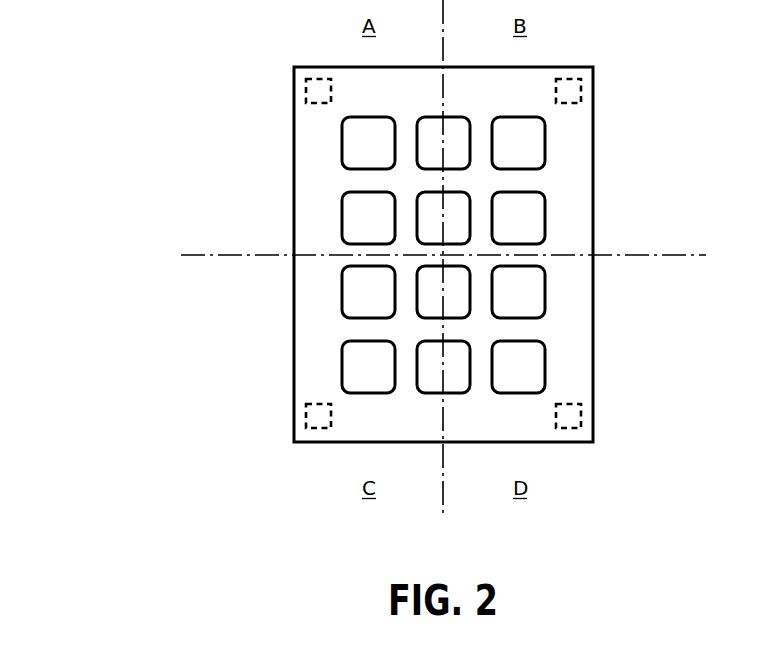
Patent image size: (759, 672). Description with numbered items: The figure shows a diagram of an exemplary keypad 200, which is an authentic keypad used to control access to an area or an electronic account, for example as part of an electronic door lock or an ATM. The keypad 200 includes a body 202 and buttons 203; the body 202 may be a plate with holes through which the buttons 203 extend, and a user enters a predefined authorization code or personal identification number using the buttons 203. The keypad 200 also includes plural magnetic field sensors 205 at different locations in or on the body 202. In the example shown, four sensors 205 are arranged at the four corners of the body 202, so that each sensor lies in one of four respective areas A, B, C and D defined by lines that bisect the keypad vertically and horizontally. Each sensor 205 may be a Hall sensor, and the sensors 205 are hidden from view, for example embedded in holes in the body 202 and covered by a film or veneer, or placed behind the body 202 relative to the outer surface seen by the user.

The keypad 200 is at (158, 93).
The body 202 is at (294, 168).
The buttons 203 is at (332, 295).
The magnetic field sensors 205 is at (313, 80).